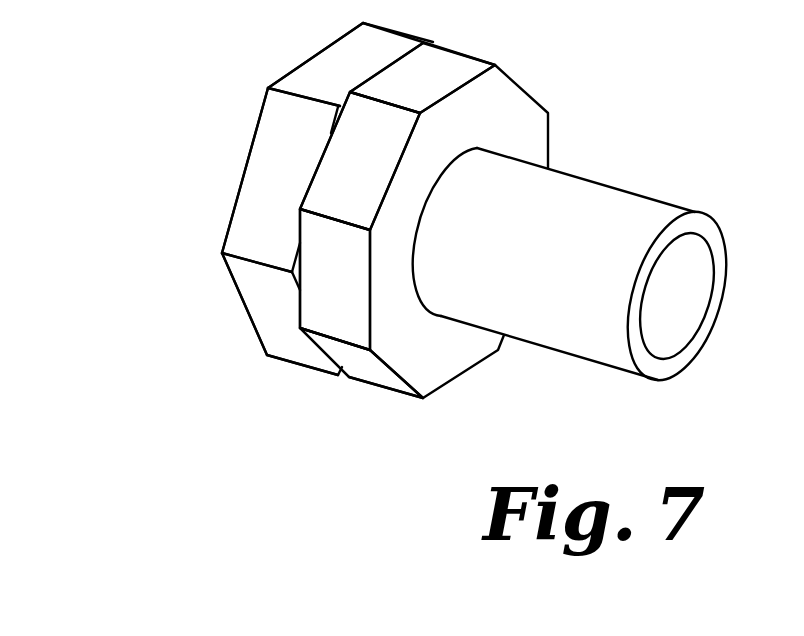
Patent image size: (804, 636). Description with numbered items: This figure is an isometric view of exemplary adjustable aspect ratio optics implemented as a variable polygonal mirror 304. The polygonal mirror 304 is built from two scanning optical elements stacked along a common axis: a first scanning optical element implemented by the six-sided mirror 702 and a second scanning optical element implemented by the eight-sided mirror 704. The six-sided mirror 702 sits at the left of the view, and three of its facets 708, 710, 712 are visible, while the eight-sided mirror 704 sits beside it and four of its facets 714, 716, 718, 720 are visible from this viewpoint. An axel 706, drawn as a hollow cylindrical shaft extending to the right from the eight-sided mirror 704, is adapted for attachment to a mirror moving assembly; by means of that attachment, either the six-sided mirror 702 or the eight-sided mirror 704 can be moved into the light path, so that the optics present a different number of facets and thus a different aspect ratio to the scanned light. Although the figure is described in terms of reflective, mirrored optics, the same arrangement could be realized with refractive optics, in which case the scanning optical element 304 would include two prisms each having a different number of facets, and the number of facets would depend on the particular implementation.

The polygonal mirror 304 is at (127, 53).
The six-sided mirror 702 is at (243, 142).
The eight-sided mirror 704 is at (500, 110).
The axel 706 is at (657, 193).
The facet 708 is at (348, 60).
The facet 710 is at (278, 183).
The facet 712 is at (272, 300).
The facet 714 is at (447, 70).
The facet 716 is at (358, 155).
The facet 718 is at (343, 263).
The facet 720 is at (378, 375).